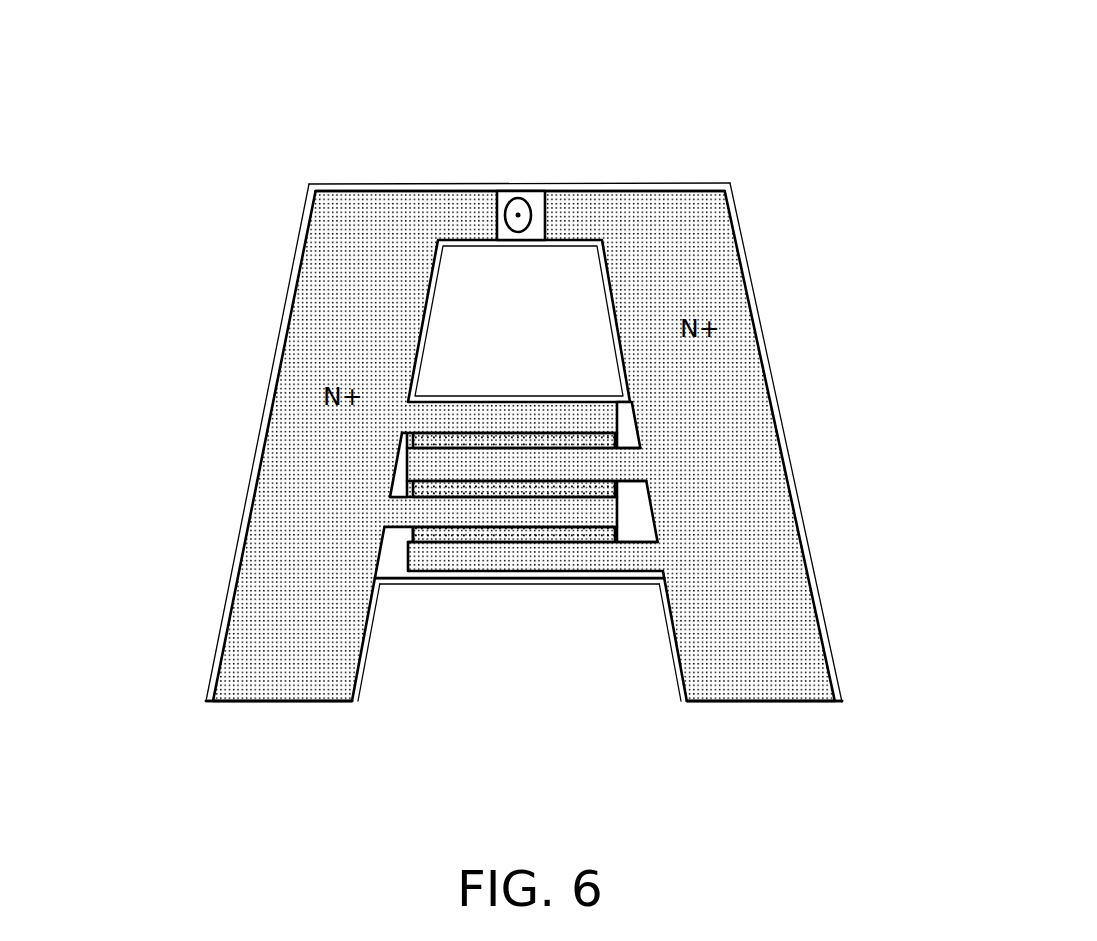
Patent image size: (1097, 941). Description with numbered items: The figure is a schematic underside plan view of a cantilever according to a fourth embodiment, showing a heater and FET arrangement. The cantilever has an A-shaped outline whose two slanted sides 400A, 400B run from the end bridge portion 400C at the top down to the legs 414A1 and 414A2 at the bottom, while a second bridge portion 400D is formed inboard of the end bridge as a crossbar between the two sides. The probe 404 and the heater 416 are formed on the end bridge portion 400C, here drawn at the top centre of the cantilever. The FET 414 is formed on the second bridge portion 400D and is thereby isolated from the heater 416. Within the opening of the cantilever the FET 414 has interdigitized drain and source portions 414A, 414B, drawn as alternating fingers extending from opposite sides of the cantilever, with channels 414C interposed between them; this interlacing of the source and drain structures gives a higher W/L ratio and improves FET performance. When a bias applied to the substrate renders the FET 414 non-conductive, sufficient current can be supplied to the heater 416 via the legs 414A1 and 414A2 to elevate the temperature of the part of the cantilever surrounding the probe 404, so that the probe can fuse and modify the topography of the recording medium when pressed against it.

The probe 404 is at (515, 198).
The FET 414 is at (511, 372).
The heater 416 is at (535, 197).
The cantilever leg side 400A is at (260, 428).
The cantilever leg side 400B is at (779, 407).
The bridge portion 400C is at (382, 182).
The second bridge portion 400D is at (585, 582).
The drain portion 414A is at (603, 415).
The source portion 414B is at (430, 470).
The channel 414C is at (537, 447).
The leg 414A1 is at (287, 658).
The leg 414A2 is at (750, 652).